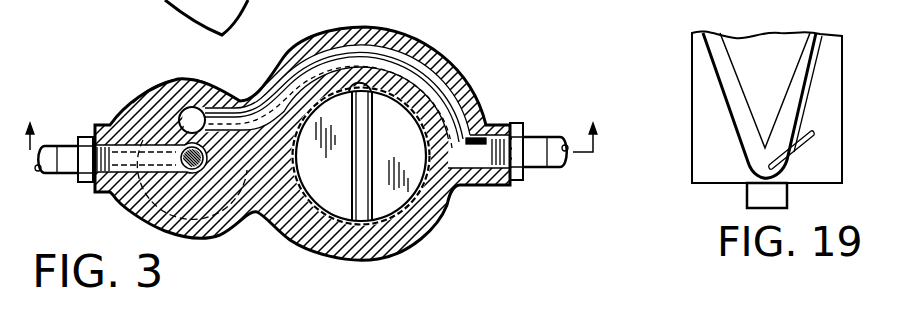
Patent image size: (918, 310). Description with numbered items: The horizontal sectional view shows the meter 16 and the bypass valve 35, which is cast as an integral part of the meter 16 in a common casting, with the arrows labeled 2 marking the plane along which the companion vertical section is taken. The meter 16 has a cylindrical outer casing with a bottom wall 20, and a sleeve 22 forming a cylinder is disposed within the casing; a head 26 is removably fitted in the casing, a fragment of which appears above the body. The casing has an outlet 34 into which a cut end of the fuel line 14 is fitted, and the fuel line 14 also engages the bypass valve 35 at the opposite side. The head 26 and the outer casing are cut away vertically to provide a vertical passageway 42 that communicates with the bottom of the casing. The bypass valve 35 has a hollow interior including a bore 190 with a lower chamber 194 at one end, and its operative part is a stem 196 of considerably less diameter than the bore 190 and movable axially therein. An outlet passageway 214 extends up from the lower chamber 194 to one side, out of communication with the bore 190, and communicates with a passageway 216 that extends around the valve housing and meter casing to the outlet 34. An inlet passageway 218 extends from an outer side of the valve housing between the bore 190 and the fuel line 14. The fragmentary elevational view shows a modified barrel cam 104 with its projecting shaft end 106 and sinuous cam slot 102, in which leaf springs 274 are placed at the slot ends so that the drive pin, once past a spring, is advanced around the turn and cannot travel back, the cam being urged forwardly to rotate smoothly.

In FIG. 3, the section line 2- 2 is at (317, 137).
In FIG. 3, the fuel line 14 is at (557, 142).
In FIG. 3, the meter 16 is at (441, 225).
In FIG. 3, the bottom wall 20 is at (405, 150).
In FIG. 3, the sleeve 22 is at (314, 206).
In FIG. 3, the head 26 is at (190, 17).
In FIG. 3, the outlet 34 is at (472, 152).
In FIG. 3, the bypass valve 35 is at (203, 236).
In FIG. 3, the vertical passageway 42 is at (358, 82).
In FIG. 19, the cam slot 102 is at (717, 66).
In FIG. 19, the barrel cam 104 is at (702, 121).
In FIG. 19, the shaft ends 106 is at (757, 198).
In FIG. 3, the bore 190 is at (186, 172).
In FIG. 3, the lower chamber 194 is at (143, 102).
In FIG. 3, the stem 196 is at (190, 175).
In FIG. 3, the outlet passageway 214 is at (192, 116).
In FIG. 3, the passageway 216 is at (441, 93).
In FIG. 3, the inlet passageway 218 is at (150, 137).
In FIG. 19, the leaf springs 274 is at (802, 146).